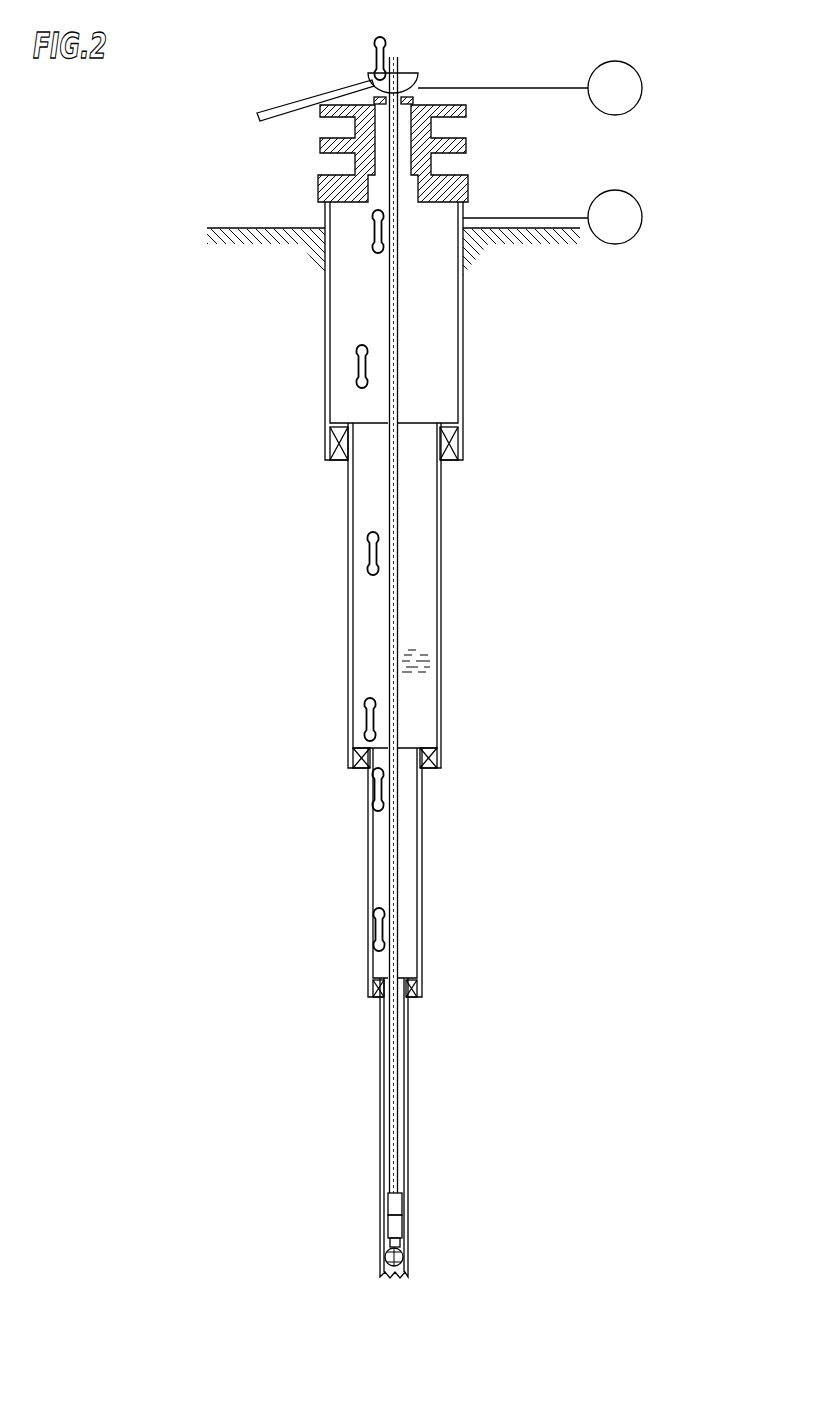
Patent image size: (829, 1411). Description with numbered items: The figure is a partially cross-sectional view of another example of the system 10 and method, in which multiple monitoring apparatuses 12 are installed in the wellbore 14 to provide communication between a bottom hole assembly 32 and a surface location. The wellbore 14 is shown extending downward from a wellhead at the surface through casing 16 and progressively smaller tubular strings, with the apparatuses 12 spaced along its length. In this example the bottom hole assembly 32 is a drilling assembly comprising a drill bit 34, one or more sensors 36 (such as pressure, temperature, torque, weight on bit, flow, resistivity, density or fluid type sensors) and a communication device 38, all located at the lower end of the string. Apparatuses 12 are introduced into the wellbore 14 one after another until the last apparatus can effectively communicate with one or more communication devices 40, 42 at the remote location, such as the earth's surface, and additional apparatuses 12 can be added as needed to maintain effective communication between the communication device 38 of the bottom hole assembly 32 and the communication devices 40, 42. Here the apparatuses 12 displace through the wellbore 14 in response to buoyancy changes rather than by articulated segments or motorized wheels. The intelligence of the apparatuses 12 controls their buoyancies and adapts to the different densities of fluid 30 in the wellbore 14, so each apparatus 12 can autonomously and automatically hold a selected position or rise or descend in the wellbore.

The system 10 is at (698, 68).
The monitoring apparatus 12 is at (372, 52).
The wellbore 14 is at (399, 1032).
The casing 16 is at (465, 352).
The fluid 30 is at (422, 648).
The bottom hole assembly 32 is at (380, 1223).
The drill bit 34 is at (402, 1242).
The sensors 36 is at (402, 1222).
The communication device 38 is at (402, 1202).
The communication device 40 is at (625, 191).
The communication device 42 is at (622, 113).